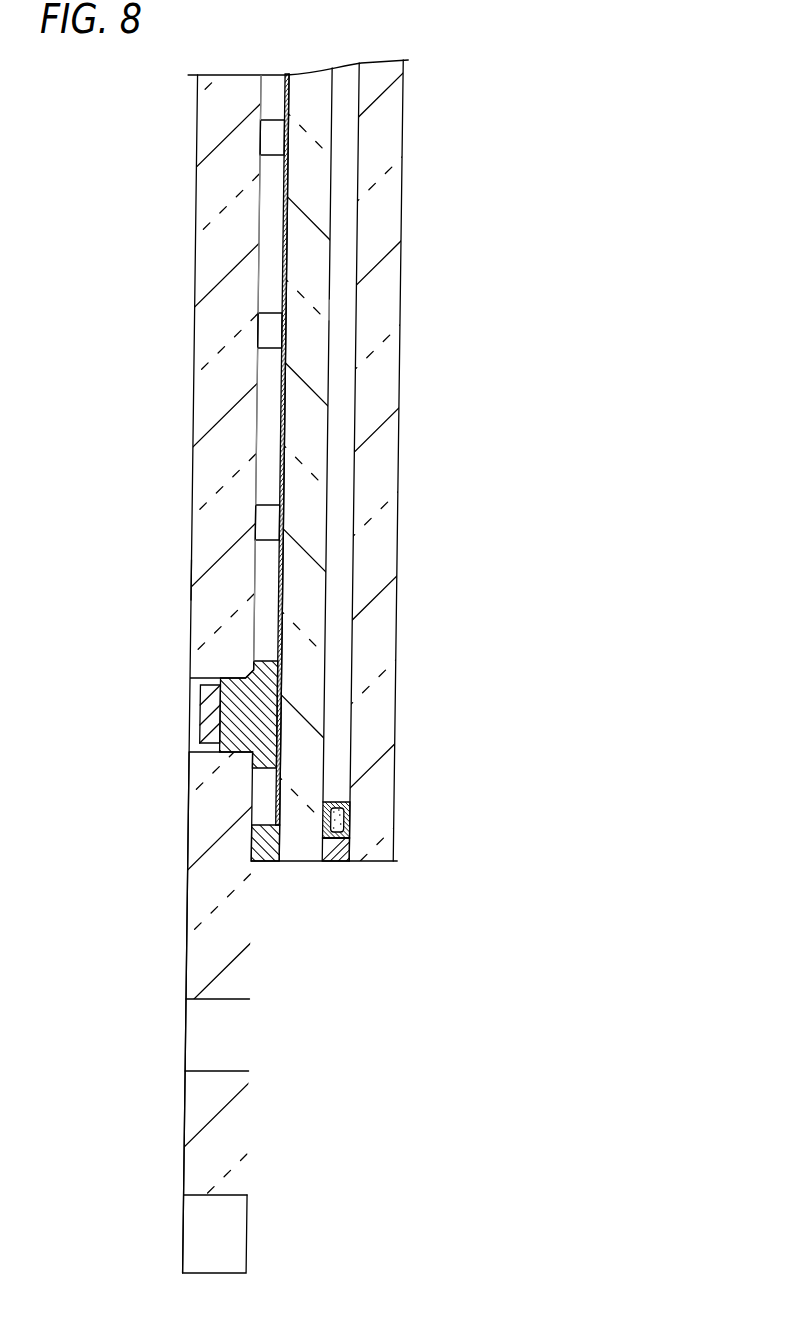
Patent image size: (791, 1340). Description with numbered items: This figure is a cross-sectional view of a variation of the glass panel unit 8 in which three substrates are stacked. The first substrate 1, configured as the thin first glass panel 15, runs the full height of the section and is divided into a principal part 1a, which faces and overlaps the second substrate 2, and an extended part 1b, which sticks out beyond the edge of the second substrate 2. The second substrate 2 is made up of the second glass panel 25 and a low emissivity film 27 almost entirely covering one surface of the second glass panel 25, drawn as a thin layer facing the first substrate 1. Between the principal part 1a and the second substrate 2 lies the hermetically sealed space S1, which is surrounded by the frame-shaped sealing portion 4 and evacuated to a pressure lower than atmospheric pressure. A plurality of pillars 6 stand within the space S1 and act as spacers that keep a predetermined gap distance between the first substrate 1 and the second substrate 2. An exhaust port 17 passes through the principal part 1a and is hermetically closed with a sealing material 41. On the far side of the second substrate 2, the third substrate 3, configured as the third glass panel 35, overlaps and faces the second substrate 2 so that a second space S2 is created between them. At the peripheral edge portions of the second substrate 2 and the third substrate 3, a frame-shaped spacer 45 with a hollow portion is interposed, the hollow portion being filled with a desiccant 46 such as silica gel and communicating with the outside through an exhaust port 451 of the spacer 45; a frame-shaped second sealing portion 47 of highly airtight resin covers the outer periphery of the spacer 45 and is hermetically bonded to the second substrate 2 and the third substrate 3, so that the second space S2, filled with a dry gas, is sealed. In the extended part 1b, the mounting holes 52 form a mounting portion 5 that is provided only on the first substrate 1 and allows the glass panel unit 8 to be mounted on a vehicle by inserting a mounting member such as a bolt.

The glass panel unit 8 is at (200, 130).
The first substrate 1 is at (201, 463).
The principal part 1a is at (220, 558).
The extended part 1b is at (214, 892).
The first glass panel 15 is at (217, 405).
The exhaust port 17 is at (200, 683).
The sealing material 41 is at (239, 715).
The pillars 6 is at (276, 330).
The space S1 is at (275, 223).
The low emissivity film 27 is at (292, 413).
The sealing portion 4 is at (271, 850).
The second substrate 2 is at (322, 133).
The second glass panel 25 is at (322, 203).
The second space S2 is at (346, 307).
The spacer 45 is at (357, 815).
The exhaust port 451 is at (350, 802).
The desiccant 46 is at (355, 827).
The second sealing portion 47 is at (341, 850).
The third substrate 3 is at (406, 598).
The third glass panel 35 is at (388, 647).
The mounting holes 52 is at (236, 1025).
The mounting portion 5 is at (276, 1048).